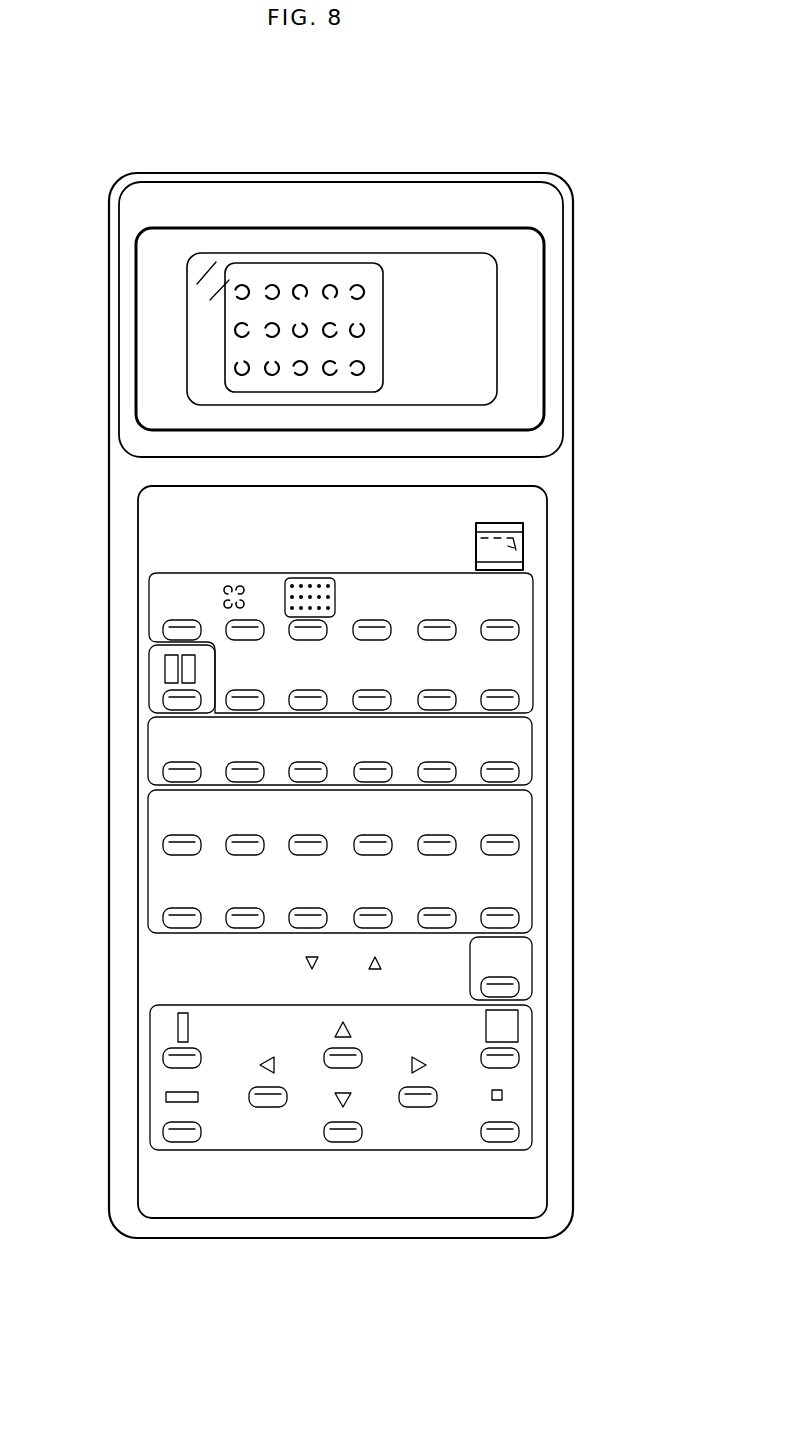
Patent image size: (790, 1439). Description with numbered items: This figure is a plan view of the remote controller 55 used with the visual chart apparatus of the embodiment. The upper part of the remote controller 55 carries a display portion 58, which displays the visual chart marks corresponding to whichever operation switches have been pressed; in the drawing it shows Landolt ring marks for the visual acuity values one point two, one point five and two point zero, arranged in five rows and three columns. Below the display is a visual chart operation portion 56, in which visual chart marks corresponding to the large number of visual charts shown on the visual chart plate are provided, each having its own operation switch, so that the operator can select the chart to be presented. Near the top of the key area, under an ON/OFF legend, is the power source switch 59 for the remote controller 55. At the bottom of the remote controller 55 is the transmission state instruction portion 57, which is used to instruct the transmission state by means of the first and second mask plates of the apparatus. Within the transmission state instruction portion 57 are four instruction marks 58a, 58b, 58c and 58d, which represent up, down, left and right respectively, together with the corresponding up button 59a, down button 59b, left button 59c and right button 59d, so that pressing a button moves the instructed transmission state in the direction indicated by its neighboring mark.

The remote controller 55 is at (578, 262).
The visual chart operation portion 56 is at (503, 667).
The transmission state instruction portion 57 is at (342, 1132).
The display portion 58 is at (462, 275).
The instruction mark 58a is at (346, 1029).
The instruction mark 58b is at (338, 1105).
The instruction mark 58c is at (262, 1063).
The instruction mark 58d is at (428, 1063).
The power source switch 59 is at (515, 540).
The up button 59a is at (327, 1048).
The down button 59b is at (348, 1141).
The left button 59c is at (262, 1106).
The right button 59d is at (420, 1107).